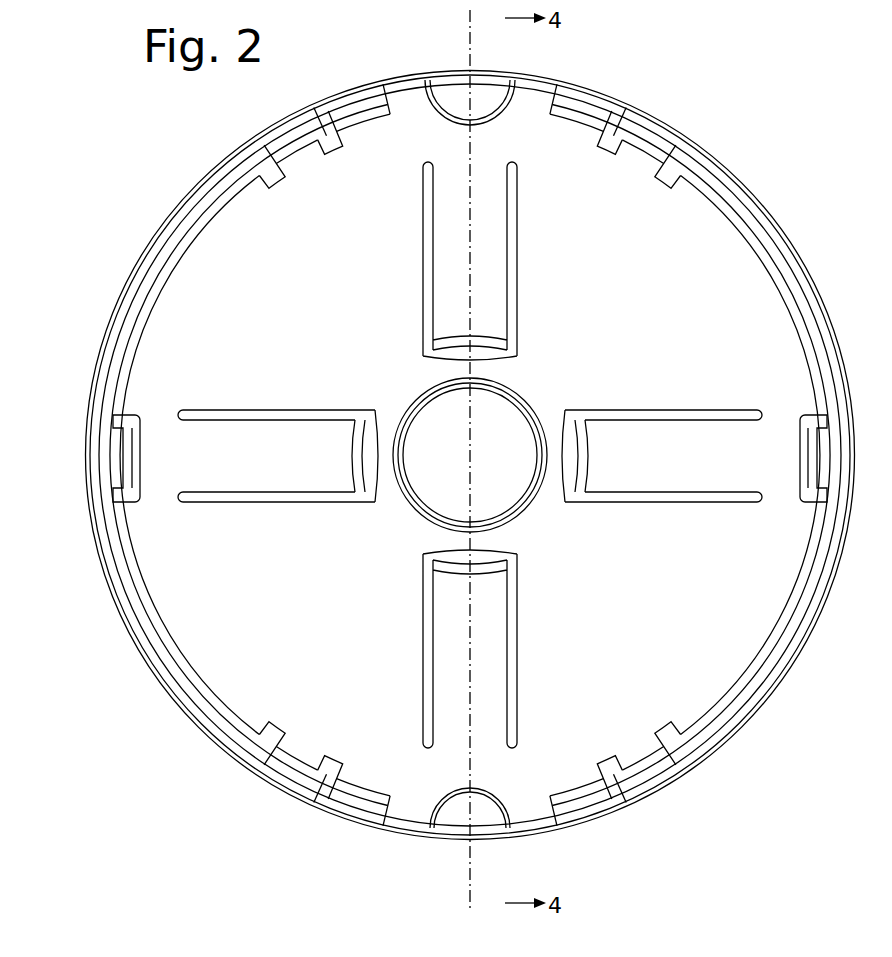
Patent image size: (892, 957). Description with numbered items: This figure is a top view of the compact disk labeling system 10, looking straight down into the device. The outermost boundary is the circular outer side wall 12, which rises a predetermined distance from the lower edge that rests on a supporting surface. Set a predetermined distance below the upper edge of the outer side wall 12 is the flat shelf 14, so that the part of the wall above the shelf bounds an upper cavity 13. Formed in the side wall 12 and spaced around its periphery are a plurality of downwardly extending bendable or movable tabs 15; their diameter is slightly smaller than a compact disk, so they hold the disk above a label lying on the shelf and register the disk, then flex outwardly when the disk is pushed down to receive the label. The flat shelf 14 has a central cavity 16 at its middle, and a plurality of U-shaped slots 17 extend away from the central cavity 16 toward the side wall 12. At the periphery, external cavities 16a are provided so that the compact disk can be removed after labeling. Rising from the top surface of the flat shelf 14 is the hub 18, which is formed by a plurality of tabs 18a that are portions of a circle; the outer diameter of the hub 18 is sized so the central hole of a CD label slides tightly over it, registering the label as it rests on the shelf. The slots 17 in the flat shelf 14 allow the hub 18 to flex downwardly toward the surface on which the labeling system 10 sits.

The compact disk labeling system 10 is at (92, 124).
The circular outer side wall 12 is at (156, 245).
The upper cavity 13 is at (302, 305).
The flat shelf 14 is at (193, 352).
The bendable tabs 15 is at (150, 430).
The central cavity 16 is at (432, 500).
The external cavities 16a is at (453, 95).
The U-shaped slots 17 is at (686, 504).
The hub 18 is at (607, 548).
The hub tabs 18a is at (374, 440).